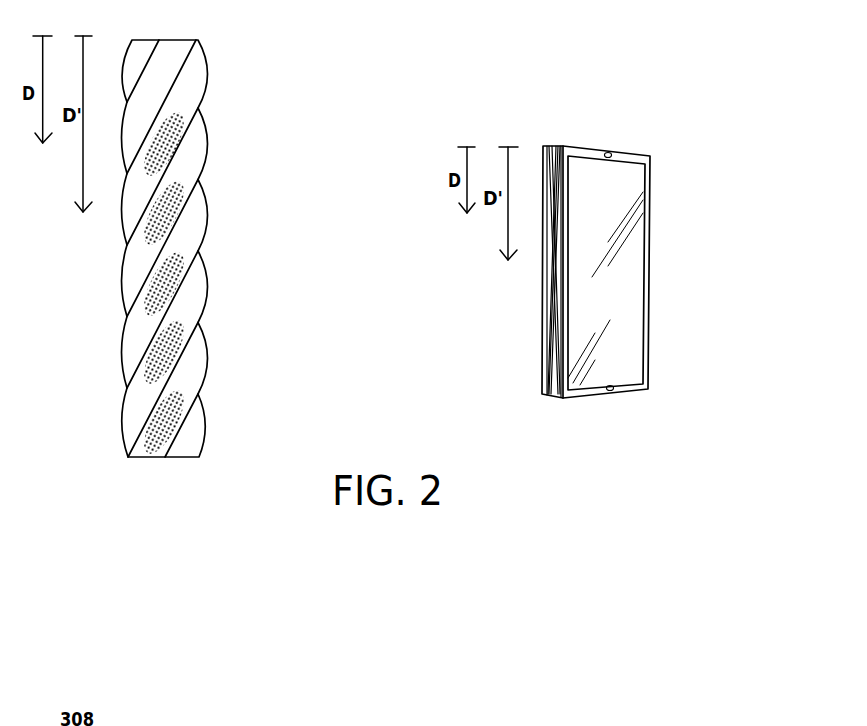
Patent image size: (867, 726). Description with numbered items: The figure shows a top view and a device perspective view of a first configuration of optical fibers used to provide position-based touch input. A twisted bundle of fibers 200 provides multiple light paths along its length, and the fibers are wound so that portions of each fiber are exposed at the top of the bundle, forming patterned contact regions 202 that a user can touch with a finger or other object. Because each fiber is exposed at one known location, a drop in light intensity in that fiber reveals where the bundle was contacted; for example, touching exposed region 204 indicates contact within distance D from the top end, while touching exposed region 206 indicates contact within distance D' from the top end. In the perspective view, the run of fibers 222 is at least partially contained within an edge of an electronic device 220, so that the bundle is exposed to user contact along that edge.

The twisted bundle of fibers 200 is at (251, 243).
The contact regions 202 is at (190, 352).
The exposed region 204 is at (168, 148).
The exposed region 206 is at (168, 210).
The electronic device 220 is at (623, 223).
The run of fibers 222 is at (557, 147).